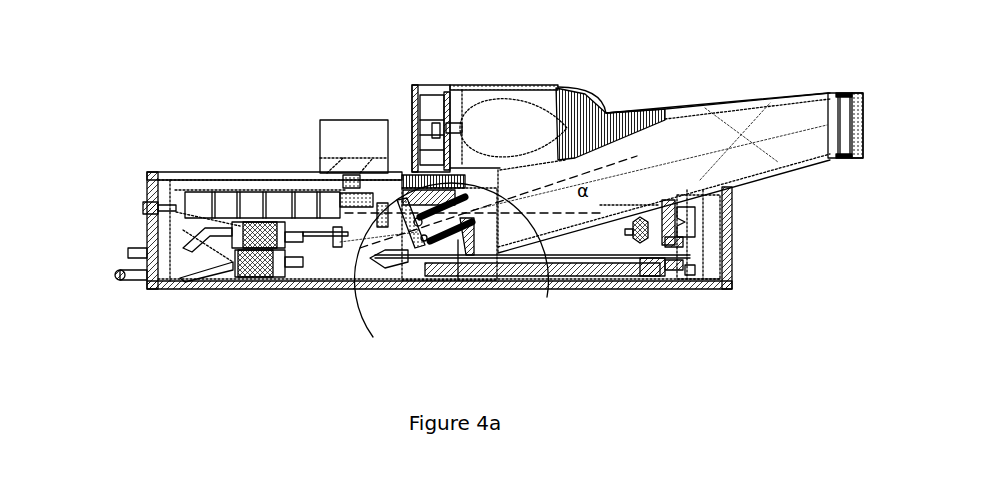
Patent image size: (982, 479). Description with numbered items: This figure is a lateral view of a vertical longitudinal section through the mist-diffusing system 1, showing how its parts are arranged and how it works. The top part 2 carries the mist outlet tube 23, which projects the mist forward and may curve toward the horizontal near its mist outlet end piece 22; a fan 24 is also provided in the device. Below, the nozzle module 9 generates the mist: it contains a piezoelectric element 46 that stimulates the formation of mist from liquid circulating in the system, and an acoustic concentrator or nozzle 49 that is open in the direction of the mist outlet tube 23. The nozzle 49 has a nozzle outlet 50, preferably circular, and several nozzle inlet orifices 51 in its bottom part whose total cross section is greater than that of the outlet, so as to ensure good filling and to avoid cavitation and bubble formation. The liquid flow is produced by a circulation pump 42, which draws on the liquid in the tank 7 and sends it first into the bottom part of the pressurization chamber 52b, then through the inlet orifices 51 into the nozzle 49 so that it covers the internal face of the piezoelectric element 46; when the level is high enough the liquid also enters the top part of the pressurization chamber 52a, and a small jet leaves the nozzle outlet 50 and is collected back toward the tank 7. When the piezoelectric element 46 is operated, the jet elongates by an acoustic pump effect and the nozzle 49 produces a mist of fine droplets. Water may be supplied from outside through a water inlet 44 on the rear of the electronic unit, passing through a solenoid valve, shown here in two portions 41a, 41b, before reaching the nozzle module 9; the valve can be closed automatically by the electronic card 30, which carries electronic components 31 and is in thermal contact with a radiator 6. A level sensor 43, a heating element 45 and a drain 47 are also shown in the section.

The system 1 is at (222, 103).
The top part 2 is at (597, 87).
The radiator 6 is at (333, 135).
The tank 7 is at (656, 268).
The nozzle module 9 is at (228, 312).
The mist outlet end piece 22 is at (864, 114).
The mist outlet tube 23 is at (715, 108).
The fan 24 is at (410, 110).
The electronic card 30 is at (273, 187).
The electronic components 31 is at (207, 198).
The first motor 41a is at (268, 283).
The second motor 41b is at (146, 209).
The circulation pump 42 is at (339, 282).
The level sensor 43 is at (690, 243).
The water inlet 44 is at (125, 252).
The heating element 45 is at (613, 267).
The piezoelectric element 46 is at (397, 286).
The drain 47 is at (167, 290).
The acoustic concentrator (nozzle) 49 is at (444, 245).
The nozzle outlet 50 is at (458, 260).
The nozzle inlet orifice 51 is at (424, 237).
The top part of the pressurization chamber 52a is at (418, 276).
The bottom part of the pressurization chamber 52b is at (458, 247).